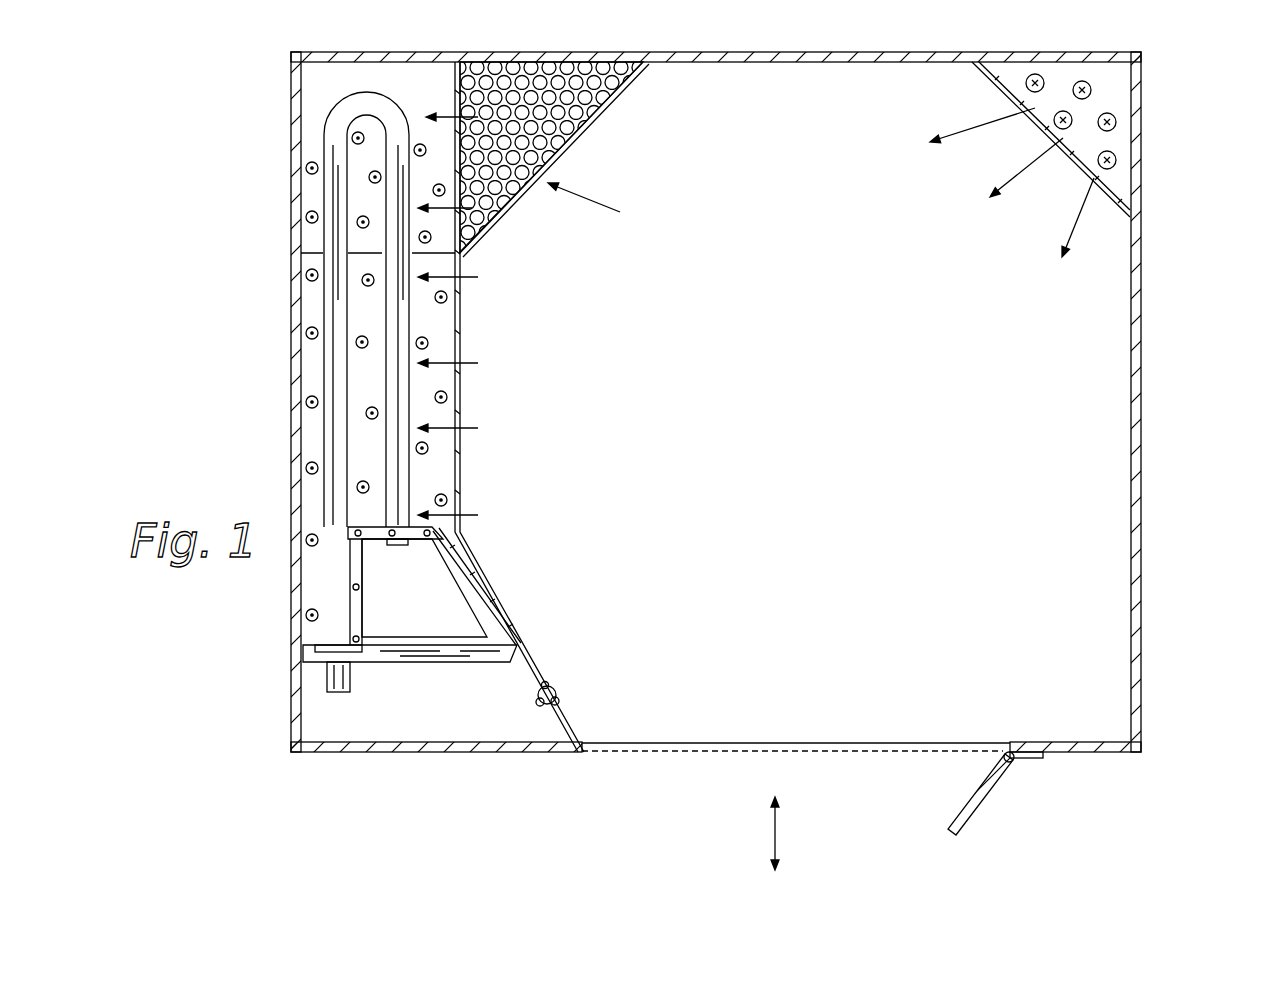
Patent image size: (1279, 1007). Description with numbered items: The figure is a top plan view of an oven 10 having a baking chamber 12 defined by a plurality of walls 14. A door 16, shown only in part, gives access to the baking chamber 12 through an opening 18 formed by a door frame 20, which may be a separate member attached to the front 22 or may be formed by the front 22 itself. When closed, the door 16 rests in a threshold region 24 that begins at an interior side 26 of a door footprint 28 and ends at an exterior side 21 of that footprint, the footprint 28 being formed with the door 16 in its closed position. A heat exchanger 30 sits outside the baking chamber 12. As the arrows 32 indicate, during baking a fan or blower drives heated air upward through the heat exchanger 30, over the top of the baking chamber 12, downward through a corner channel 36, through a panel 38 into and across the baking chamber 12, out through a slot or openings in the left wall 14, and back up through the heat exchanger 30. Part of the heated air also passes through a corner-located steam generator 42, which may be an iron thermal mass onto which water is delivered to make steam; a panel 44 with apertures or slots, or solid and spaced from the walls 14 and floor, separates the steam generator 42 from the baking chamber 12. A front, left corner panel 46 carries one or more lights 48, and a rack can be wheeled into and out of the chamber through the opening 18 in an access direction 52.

The oven 10 is at (783, 427).
The baking chamber 12 is at (812, 410).
The walls 14 is at (857, 62).
The door 16 is at (982, 808).
The opening 18 is at (673, 780).
The door frame 20 is at (583, 752).
The exterior side 21 is at (727, 751).
The front 22 is at (465, 752).
The threshold region 24 is at (916, 760).
The interior side 26 is at (800, 743).
The door footprint 28 is at (875, 751).
The heat exchanger 30 is at (310, 304).
The arrows 32 is at (355, 128).
The corner channel 36 is at (1100, 143).
The panel 38 is at (1013, 113).
The steam generator 42 is at (557, 130).
The panel 44 is at (508, 208).
The front, left corner panel 46 is at (513, 625).
The lights 48 is at (557, 693).
The access direction 52 is at (775, 835).